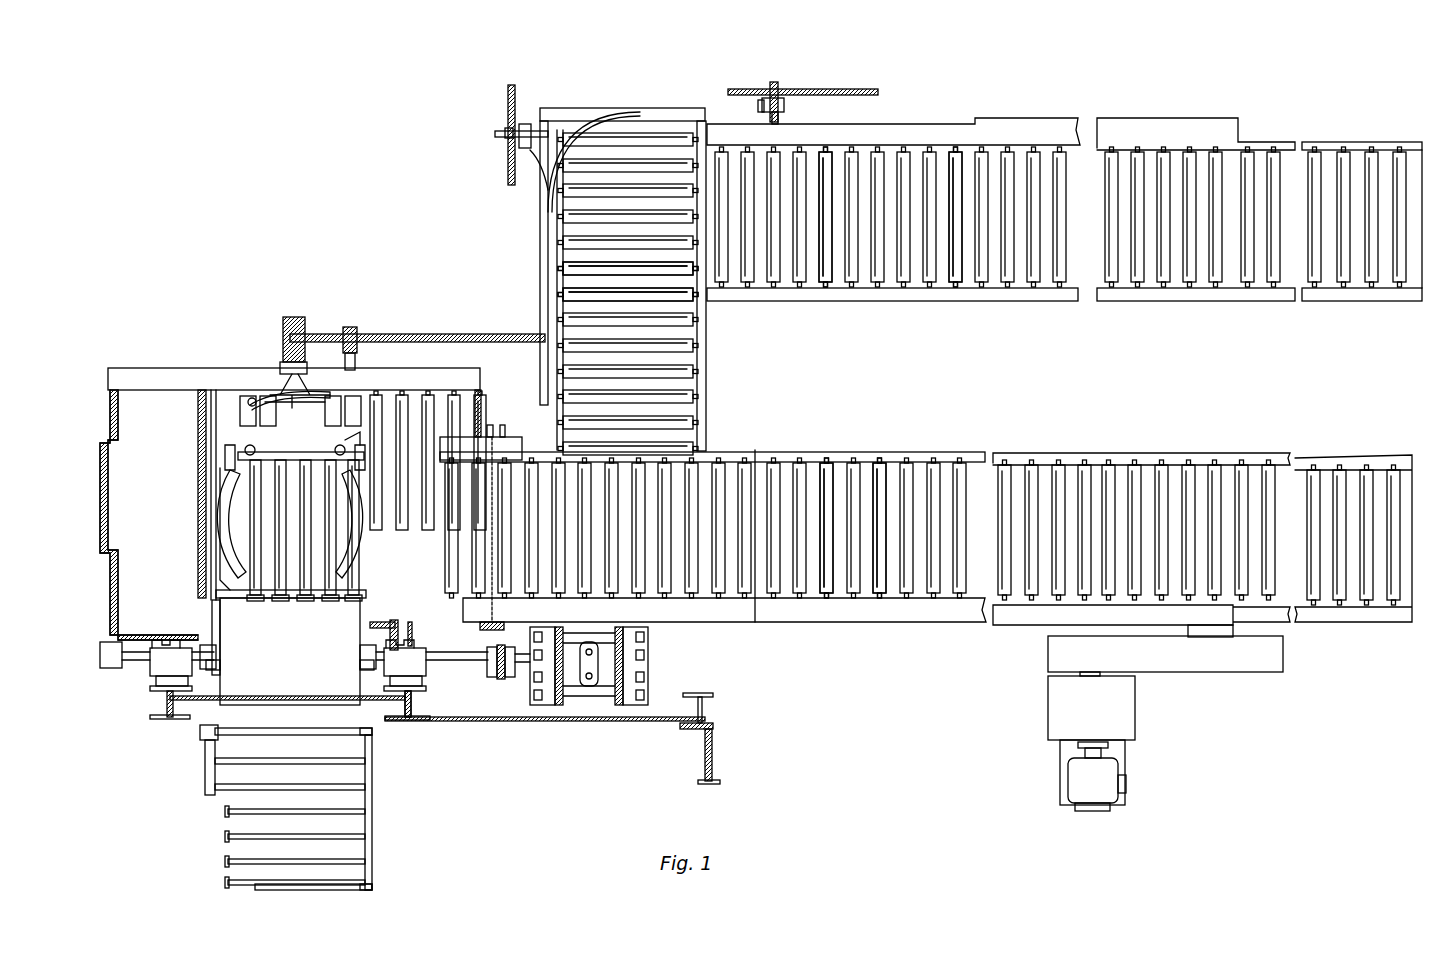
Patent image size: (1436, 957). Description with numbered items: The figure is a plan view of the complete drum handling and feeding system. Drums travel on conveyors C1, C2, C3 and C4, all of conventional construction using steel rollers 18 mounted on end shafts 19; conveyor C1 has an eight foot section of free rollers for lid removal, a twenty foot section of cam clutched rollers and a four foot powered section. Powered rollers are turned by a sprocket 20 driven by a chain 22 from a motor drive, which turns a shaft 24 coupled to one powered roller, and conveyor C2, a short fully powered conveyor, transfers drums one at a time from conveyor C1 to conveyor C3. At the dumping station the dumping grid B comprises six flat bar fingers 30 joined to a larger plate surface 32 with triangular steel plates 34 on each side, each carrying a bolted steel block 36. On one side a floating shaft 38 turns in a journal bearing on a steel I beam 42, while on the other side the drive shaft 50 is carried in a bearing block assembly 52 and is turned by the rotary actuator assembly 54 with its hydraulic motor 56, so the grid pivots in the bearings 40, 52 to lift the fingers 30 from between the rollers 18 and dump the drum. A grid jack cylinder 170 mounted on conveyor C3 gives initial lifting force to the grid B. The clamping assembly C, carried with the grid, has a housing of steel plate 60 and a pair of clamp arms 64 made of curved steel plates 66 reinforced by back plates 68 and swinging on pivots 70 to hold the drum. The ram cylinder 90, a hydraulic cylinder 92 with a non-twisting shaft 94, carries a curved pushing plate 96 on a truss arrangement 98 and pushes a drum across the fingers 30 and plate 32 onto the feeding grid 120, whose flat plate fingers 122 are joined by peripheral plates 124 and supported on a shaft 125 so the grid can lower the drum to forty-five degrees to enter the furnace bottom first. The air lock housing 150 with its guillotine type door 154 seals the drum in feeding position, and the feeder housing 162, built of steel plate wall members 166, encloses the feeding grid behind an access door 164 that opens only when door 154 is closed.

The rollers 18 is at (822, 265).
The end shafts 19 is at (948, 288).
The sprocket 20 is at (530, 128).
The chain 22 is at (512, 86).
The shaft 24 is at (546, 182).
The bar fingers 30 is at (248, 605).
The plate surface 32 is at (336, 636).
The triangular steel plates 34 is at (384, 628).
The steel block 36 is at (210, 690).
The floating shaft 38 is at (150, 646).
The bearing 40 is at (160, 644).
The steel I beam 42 is at (167, 702).
The drive shaft 50 is at (466, 660).
The bearing block assembly 52 is at (506, 690).
The rotary actuator assembly 54 is at (656, 676).
The hydraulic motor 56 is at (600, 695).
The steel plate 60 is at (282, 436).
The clamp arms 64 is at (336, 448).
The curved steel plates 66 is at (230, 508).
The back plates 68 is at (232, 478).
The pivots 70 is at (255, 448).
The ram cylinder 90 is at (316, 325).
The hydraulic cylinder 92 is at (302, 316).
The shaft 94 is at (290, 378).
The curved pushing plate 96 is at (262, 398).
The truss arrangement 98 is at (337, 348).
The feeding grid 120 is at (380, 820).
The flat plate fingers 122 is at (345, 790).
The peripheral plates 124 is at (360, 728).
The shaft 125 is at (218, 746).
The air lock housing 150 is at (137, 398).
The guillotine type door 154 is at (512, 440).
The feeder housing 162 is at (715, 745).
The access door 164 is at (304, 700).
The steel plate wall members 166 is at (712, 770).
The grid jack cylinder 170 is at (216, 380).
The clamping assembly C is at (225, 436).
The dumping grid B is at (205, 638).
The conveyor C1 is at (1015, 300).
The conveyor C2 is at (532, 247).
The conveyor C3 is at (800, 632).
The conveyor C4 is at (1028, 444).